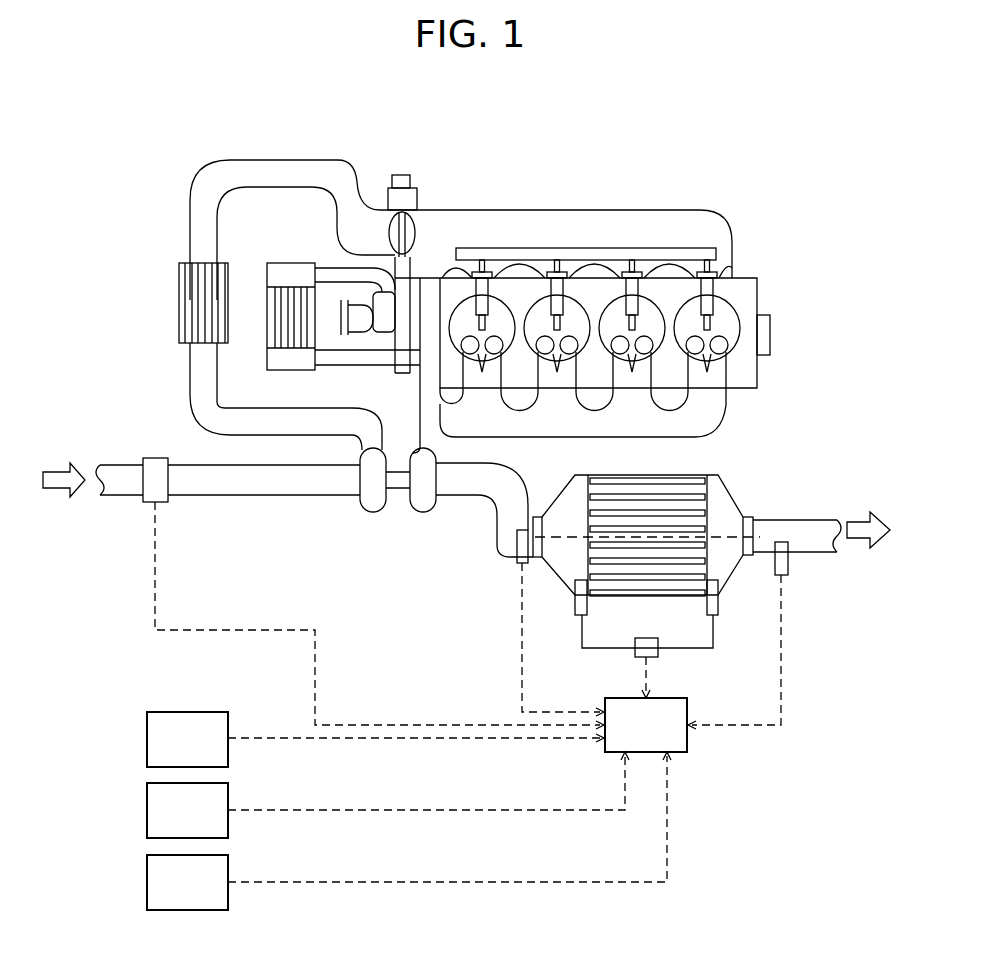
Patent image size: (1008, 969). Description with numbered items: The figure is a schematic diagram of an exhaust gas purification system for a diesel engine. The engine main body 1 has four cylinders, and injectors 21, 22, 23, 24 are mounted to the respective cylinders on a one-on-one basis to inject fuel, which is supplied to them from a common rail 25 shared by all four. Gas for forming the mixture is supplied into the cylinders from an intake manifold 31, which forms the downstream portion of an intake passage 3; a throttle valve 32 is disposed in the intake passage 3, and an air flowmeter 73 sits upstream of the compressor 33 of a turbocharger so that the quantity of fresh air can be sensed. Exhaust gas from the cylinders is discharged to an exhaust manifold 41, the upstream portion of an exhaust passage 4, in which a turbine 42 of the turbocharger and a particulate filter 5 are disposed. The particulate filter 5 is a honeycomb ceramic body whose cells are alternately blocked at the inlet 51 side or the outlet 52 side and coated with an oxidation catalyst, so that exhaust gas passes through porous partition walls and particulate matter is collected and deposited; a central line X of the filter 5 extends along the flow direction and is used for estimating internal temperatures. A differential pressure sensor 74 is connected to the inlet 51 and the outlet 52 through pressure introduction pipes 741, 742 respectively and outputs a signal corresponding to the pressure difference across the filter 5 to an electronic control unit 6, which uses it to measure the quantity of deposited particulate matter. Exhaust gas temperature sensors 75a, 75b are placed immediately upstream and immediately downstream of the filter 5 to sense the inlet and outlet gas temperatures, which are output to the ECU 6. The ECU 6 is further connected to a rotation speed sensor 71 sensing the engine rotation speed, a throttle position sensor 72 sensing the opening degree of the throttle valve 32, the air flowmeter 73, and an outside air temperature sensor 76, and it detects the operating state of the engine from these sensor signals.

The engine main body 1 is at (750, 288).
The intake passage 3 is at (207, 143).
The injector 21 is at (486, 290).
The injector 22 is at (561, 290).
The injector 23 is at (637, 290).
The injector 24 is at (708, 290).
The common rail 25 is at (473, 253).
The intake manifold 31 is at (560, 222).
The throttle valve 32 is at (388, 236).
The compressor 33 is at (375, 498).
The exhaust passage 4 is at (468, 512).
The exhaust manifold 41 is at (700, 418).
The turbine 42 is at (428, 500).
The particulate filter 5 is at (653, 495).
The inlet 51 is at (588, 540).
The outlet 52 is at (710, 506).
The electronic control unit 6 is at (690, 750).
The rotation speed sensor 71 is at (147, 737).
The throttle position sensor 72 is at (147, 807).
The air flowmeter 73 is at (152, 503).
The differential pressure sensor 74 is at (657, 650).
The pressure introduction pipe 741 is at (596, 646).
The pressure introduction pipe 742 is at (715, 636).
The exhaust gas temperature sensor 75a is at (519, 553).
The exhaust gas temperature sensor 75b is at (788, 560).
The outside air temperature sensor 76 is at (147, 880).
The central line X is at (717, 538).